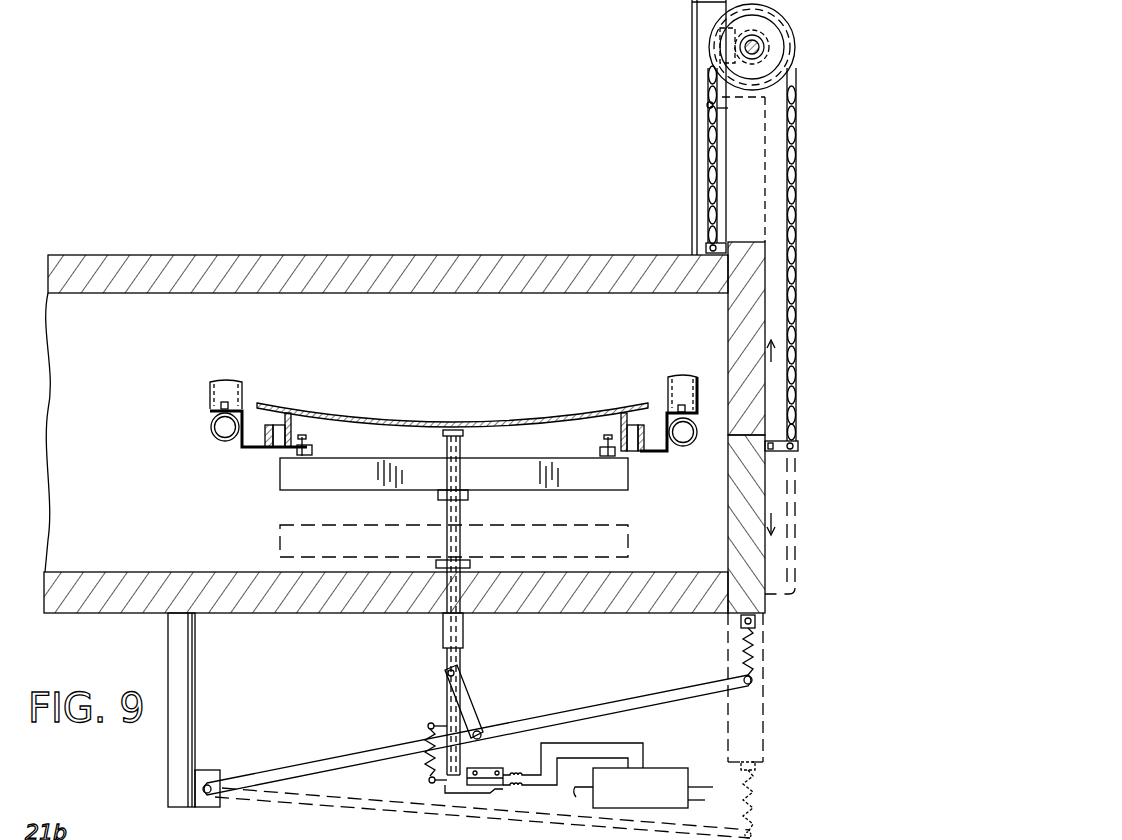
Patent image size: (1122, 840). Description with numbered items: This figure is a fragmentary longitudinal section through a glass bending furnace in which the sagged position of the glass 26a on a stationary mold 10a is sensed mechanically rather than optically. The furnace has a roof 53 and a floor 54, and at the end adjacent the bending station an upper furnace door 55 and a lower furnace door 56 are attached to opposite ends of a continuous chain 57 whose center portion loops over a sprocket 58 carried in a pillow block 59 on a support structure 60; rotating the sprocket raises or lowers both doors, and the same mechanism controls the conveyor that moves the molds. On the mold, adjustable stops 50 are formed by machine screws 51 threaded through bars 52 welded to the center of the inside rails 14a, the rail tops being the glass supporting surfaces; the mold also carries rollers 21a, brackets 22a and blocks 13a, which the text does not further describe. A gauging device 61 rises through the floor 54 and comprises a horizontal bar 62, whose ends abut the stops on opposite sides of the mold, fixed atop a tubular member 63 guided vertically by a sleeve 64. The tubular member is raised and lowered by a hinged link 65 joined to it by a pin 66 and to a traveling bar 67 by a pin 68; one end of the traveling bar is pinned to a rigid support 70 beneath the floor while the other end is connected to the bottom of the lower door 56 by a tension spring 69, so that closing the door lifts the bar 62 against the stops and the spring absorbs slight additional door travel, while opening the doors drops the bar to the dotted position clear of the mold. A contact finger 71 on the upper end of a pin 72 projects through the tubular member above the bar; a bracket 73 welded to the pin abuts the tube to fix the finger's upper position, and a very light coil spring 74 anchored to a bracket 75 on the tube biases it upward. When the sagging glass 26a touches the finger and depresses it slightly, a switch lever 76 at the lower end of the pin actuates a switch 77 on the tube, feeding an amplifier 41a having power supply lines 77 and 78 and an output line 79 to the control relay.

The mold 10a is at (262, 456).
The block 13a is at (266, 440).
The inside rails 14a is at (291, 428).
The roller 21a is at (210, 400).
The bracket 22a is at (245, 449).
The glass 26a is at (520, 413).
The amplifier 41a is at (690, 747).
The adjustable stops 50 is at (315, 450).
The machine screws 51 is at (306, 438).
The bars 52 is at (305, 456).
The roof 53 is at (300, 258).
The floor 54 is at (130, 546).
The upper furnace door 55 is at (726, 313).
The lower furnace door 56 is at (726, 530).
The continuous chain 57 is at (710, 133).
The sprocket 58 is at (712, 43).
The pillow block 59 is at (745, 30).
The support structure 60 is at (722, 97).
The gauging device 61 is at (278, 480).
The horizontal bar 62 is at (383, 491).
The tubular member 63 is at (467, 514).
The sleeve 64 is at (463, 630).
The hinged link 65 is at (471, 697).
The pin 66 is at (460, 670).
The traveling bar 67 is at (612, 702).
The pin 68 is at (481, 731).
The tension spring 69 is at (740, 645).
The rigid support 70 is at (216, 806).
The contact finger 71 is at (463, 436).
The pin 72 is at (452, 789).
The bracket 73 is at (430, 781).
The coil spring 74 is at (428, 768).
The bracket 75 is at (432, 722).
The switch lever 76 is at (465, 796).
The switch 77 is at (500, 790).
The power supply line 78 is at (692, 801).
The output line 79 is at (570, 798).